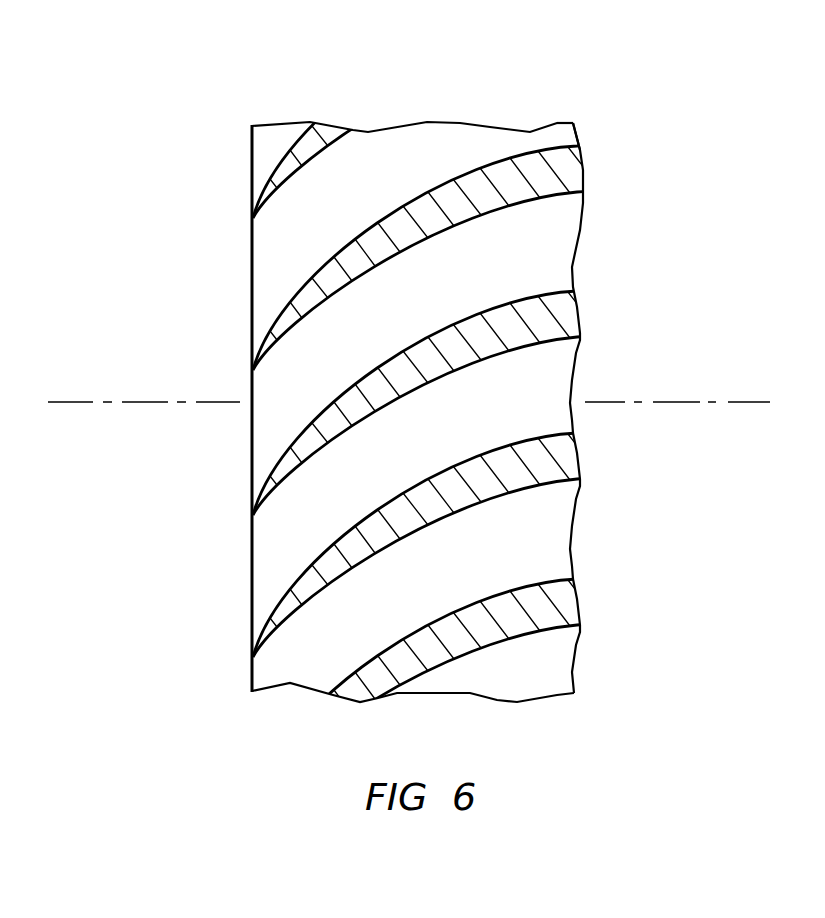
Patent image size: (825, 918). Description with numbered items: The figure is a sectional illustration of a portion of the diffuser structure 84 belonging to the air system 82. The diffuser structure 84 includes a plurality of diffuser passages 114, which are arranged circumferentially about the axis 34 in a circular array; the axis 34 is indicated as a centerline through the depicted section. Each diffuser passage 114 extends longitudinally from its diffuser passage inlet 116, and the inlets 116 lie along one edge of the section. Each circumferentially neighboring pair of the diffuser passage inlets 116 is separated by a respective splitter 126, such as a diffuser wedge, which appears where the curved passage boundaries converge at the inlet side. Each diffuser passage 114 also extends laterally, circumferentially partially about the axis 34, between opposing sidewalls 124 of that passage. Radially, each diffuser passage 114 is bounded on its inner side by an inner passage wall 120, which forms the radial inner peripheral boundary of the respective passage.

The axis 34 is at (730, 402).
The air system 82 is at (517, 96).
The diffuser structure 84 is at (560, 123).
The diffuser passage 114 is at (394, 179).
The diffuser passage inlet 116 is at (252, 177).
The inner passage wall 120 is at (552, 525).
The sidewalls 124 is at (576, 350).
The splitter 126 is at (268, 205).